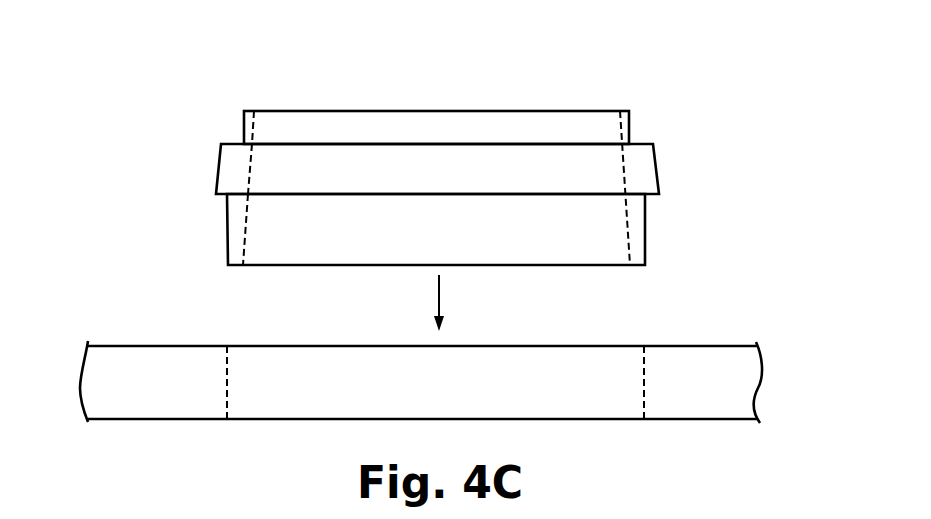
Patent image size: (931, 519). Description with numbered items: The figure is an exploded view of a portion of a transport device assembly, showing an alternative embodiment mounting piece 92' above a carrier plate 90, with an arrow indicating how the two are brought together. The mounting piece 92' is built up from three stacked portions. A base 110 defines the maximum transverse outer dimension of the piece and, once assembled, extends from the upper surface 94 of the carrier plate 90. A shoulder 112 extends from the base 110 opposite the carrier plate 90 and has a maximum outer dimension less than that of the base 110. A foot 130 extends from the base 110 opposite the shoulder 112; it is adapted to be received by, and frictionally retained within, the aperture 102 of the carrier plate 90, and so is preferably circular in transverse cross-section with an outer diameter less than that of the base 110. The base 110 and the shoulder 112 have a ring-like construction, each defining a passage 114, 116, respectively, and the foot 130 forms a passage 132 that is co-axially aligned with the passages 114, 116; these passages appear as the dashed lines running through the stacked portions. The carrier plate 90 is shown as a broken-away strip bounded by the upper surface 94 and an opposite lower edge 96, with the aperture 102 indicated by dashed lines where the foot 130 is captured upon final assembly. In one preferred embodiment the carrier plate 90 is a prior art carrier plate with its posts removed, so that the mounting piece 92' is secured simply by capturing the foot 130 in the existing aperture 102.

The carrier plate 90 is at (117, 427).
The mounting piece 92' is at (594, 227).
The upper surface 94 is at (141, 352).
The bottom edge of strip 96 is at (180, 420).
The aperture 102 is at (228, 398).
The base 110 is at (227, 182).
The shoulder 112 is at (240, 135).
The passage 114 is at (253, 167).
The passage 116 is at (255, 127).
The foot 130 is at (233, 235).
The passage 132 is at (250, 243).